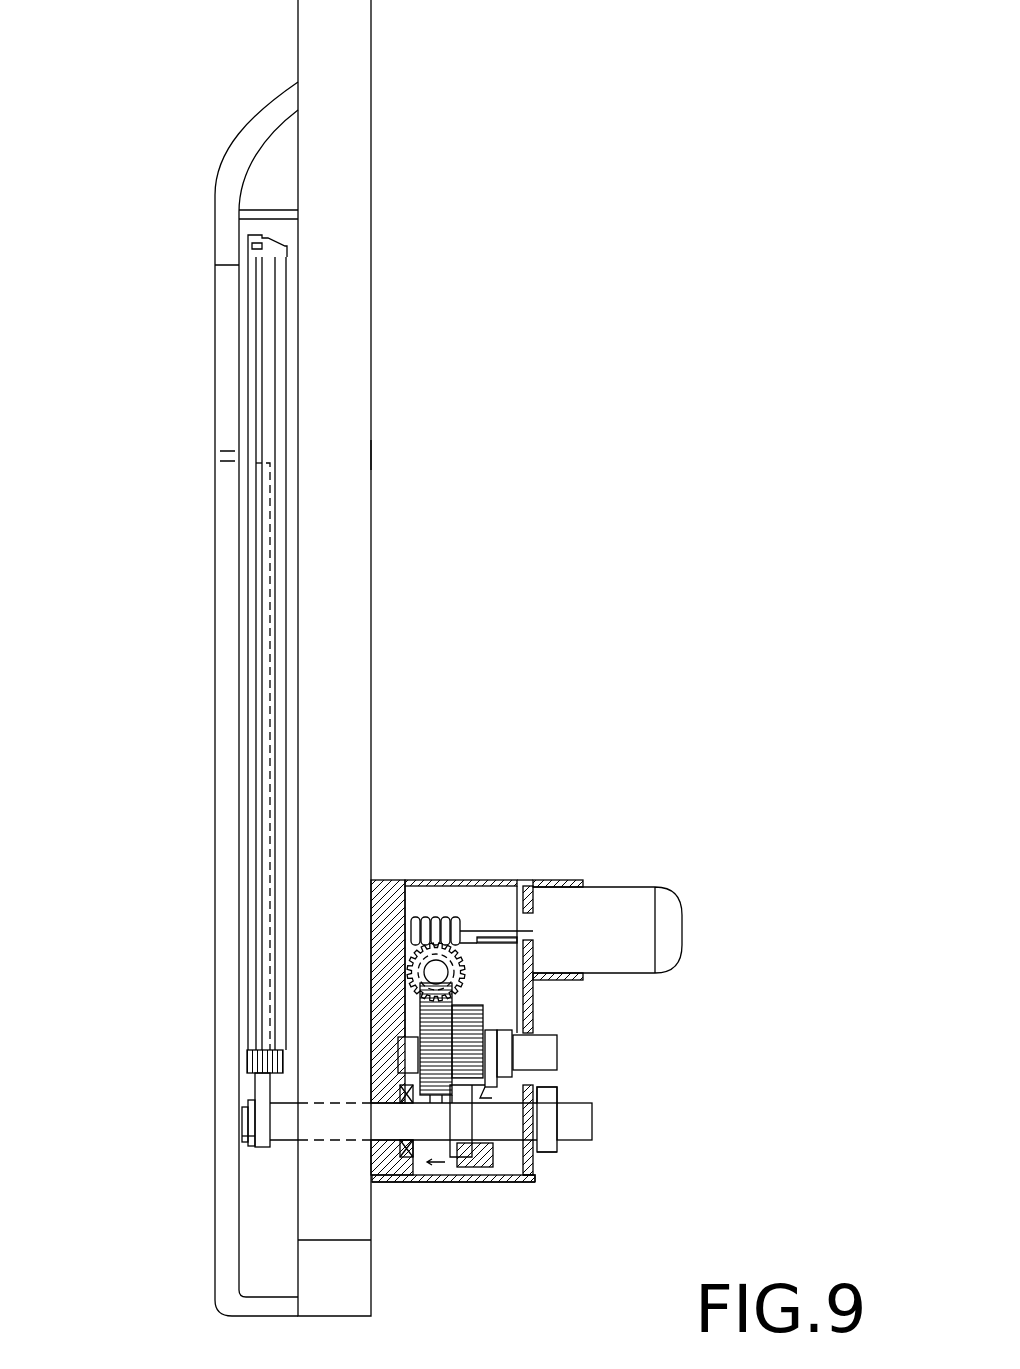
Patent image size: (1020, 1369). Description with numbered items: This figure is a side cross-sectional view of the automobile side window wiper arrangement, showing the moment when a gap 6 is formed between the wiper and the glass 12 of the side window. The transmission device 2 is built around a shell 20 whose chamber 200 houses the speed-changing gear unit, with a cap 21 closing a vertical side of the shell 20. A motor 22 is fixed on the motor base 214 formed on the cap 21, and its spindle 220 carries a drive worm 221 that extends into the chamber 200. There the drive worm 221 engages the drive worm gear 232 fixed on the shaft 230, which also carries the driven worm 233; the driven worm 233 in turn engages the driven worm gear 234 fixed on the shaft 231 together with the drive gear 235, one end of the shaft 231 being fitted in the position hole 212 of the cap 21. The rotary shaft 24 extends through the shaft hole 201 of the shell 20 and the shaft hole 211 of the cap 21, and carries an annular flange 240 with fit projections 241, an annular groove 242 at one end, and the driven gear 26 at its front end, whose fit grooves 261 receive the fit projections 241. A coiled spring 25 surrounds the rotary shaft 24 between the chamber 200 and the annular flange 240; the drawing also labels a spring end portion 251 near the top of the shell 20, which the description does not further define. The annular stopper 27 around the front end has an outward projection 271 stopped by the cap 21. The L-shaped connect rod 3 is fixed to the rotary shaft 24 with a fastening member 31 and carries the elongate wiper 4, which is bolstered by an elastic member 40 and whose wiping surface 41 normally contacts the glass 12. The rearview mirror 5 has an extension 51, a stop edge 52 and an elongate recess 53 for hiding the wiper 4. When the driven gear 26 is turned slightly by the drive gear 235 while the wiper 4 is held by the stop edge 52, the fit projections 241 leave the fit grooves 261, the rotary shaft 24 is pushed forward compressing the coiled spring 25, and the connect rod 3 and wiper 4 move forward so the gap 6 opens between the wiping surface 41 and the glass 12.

The transmission device 2 is at (545, 645).
The L-shaped connect rod 3 is at (263, 1090).
The elongate wiper 4 is at (255, 390).
The rearview mirror 5 is at (215, 652).
The gap 6 is at (298, 376).
The glass 12 is at (348, 452).
The shell 20 is at (393, 890).
The cap 21 is at (533, 1020).
The motor 22 is at (637, 905).
The rotary shaft 24 is at (505, 1167).
The coiled spring 25 is at (425, 1105).
The driven gear 26 is at (478, 1157).
The annular stopper 27 is at (556, 1122).
The fastening member 31 is at (243, 1138).
The elastic member 40 is at (250, 245).
The wiping surface 41 is at (285, 510).
The extension 51 is at (227, 348).
The elongate stop edge 52 is at (272, 212).
The elongate recess 53 is at (287, 235).
The chamber 200 is at (467, 897).
The shaft hole 201 is at (392, 1182).
The shaft hole 211 is at (528, 1182).
The position hole 212 is at (550, 1155).
The motor base 214 is at (570, 880).
The spindle 220 is at (497, 933).
The drive worm 221 is at (437, 915).
The shaft 230 is at (440, 972).
The shaft 231 is at (408, 1058).
The drive worm gear 232 is at (440, 971).
The driven worm 233 is at (470, 985).
The driven worm gear 234 is at (555, 1036).
The drive gear 235 is at (484, 1047).
The annular flange 240 is at (447, 1100).
The fit projections 241 is at (462, 1100).
The annular groove 242 is at (243, 1122).
The top plate 251 is at (517, 882).
The fit grooves 261 is at (482, 1098).
The outward projection 271 is at (550, 1092).